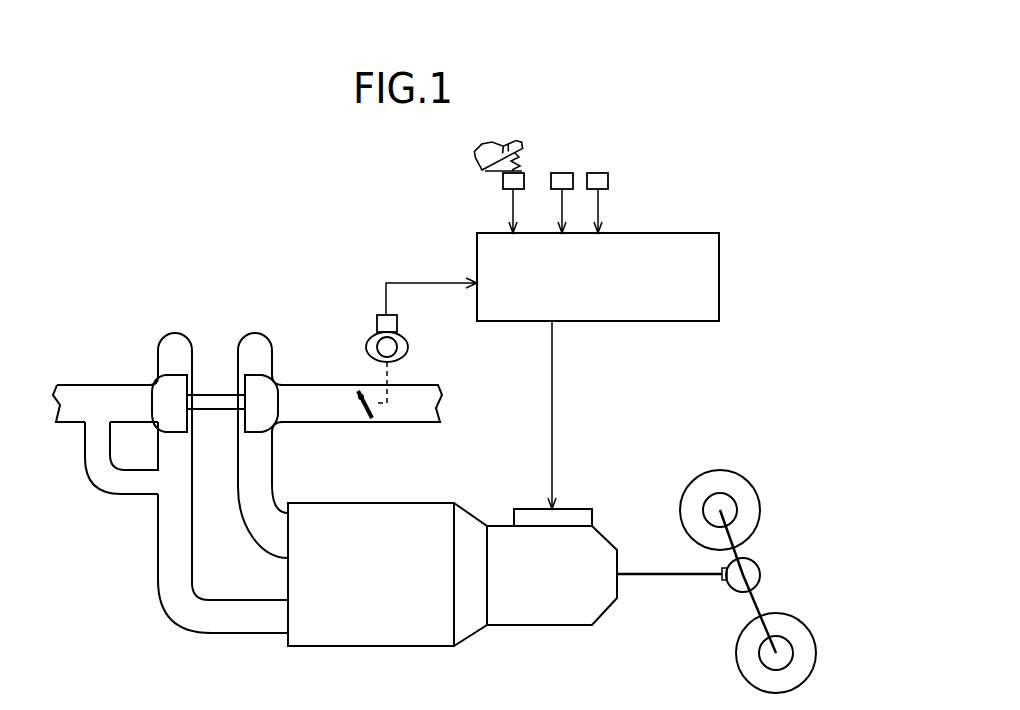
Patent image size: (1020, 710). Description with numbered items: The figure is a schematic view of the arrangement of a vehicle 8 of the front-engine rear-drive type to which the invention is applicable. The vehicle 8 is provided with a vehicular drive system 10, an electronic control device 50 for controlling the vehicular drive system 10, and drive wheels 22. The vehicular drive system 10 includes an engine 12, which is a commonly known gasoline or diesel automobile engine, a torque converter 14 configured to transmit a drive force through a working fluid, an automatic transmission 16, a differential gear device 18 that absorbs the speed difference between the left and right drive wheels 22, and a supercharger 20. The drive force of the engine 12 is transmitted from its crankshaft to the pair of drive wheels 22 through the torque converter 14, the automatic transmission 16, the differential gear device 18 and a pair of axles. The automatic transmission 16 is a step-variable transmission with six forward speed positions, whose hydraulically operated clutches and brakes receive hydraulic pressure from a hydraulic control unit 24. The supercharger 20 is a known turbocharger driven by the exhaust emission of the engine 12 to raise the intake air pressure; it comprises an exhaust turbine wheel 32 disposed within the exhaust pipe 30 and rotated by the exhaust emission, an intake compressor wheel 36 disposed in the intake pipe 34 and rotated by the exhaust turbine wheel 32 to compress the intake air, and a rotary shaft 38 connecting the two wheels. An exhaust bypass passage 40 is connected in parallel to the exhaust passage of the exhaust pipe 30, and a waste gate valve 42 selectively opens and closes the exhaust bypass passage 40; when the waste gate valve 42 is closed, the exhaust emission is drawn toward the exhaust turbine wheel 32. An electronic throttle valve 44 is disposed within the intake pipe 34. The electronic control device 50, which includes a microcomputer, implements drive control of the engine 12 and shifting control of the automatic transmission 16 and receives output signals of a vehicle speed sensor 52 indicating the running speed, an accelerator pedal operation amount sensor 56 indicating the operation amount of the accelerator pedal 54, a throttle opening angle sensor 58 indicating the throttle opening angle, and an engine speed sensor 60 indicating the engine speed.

The vehicle 8 is at (689, 161).
The vehicular drive system 10 is at (617, 454).
The engine 12 is at (404, 508).
The torque converter 14 is at (465, 518).
The automatic transmission 16 is at (598, 540).
The differential gear device 18 is at (758, 574).
The supercharger 20 is at (212, 445).
The drive wheels 22 is at (756, 498).
The hydraulic control unit 24 is at (584, 511).
The exhaust pipe 30 is at (98, 386).
The exhaust turbine wheel 32 is at (163, 392).
The intake pipe 34 is at (322, 383).
The intake compressor wheel 36 is at (263, 392).
The rotary shaft 38 is at (212, 409).
The exhaust bypass passage 40 is at (97, 473).
The waste gate valve 42 is at (150, 485).
The electronic throttle valve 44 is at (364, 412).
The electronic control device 50 is at (708, 235).
The vehicle speed sensor 52 is at (563, 172).
The accelerator pedal 54 is at (526, 152).
The accelerator pedal operation amount sensor 56 is at (503, 178).
The throttle opening angle sensor 58 is at (397, 320).
The engine speed sensor 60 is at (598, 172).